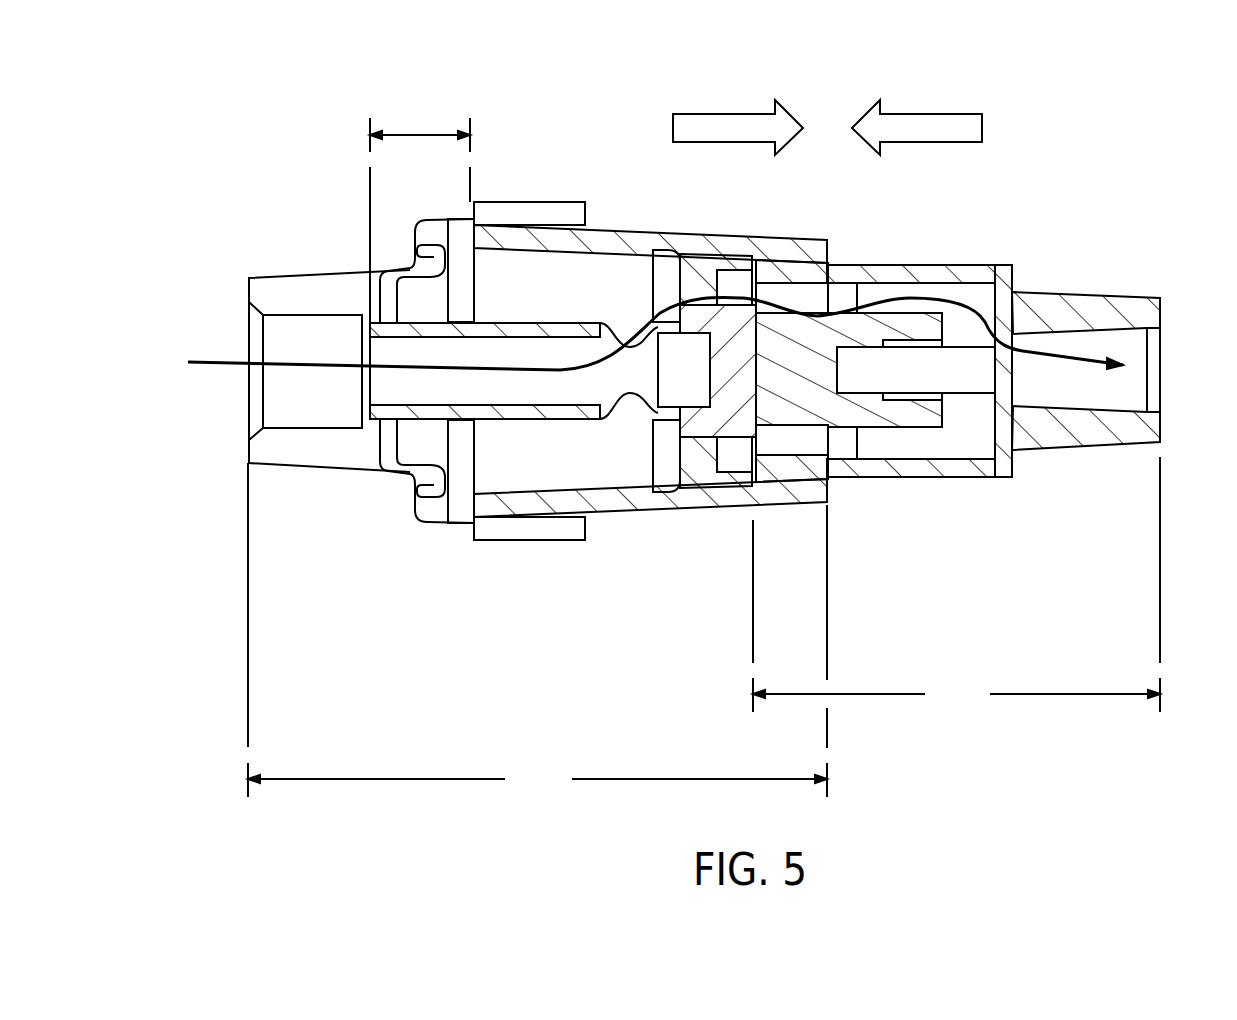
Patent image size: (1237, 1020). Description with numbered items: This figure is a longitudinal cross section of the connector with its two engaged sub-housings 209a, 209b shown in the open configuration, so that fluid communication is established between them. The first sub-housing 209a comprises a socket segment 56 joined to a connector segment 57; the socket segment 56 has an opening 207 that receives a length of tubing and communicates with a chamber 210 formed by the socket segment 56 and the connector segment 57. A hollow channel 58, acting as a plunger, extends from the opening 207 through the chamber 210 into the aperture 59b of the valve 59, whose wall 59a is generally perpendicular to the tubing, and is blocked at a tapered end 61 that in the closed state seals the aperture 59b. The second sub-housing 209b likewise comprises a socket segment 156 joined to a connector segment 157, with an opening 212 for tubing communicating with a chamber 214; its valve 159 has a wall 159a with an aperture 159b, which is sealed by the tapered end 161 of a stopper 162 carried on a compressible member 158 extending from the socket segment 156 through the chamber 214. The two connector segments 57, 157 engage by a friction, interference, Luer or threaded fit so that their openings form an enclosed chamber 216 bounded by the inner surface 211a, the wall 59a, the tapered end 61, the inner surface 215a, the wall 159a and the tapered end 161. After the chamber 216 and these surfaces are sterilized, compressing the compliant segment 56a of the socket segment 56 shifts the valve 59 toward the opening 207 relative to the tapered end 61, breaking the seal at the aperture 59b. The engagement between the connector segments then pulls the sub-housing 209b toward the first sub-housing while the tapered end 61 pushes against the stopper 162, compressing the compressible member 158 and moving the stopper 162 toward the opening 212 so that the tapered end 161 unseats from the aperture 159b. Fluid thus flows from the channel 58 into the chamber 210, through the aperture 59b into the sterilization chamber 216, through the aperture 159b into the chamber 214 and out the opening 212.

The socket segment 56 is at (297, 258).
The compliant segment 56a is at (422, 133).
The connector segment 57 is at (640, 215).
The hollow channel 58 is at (505, 405).
The valve 59 is at (700, 287).
The wall 59a is at (700, 457).
The aperture 59b is at (700, 440).
The tapered end 61 is at (738, 380).
The socket segment 156 is at (1070, 280).
The connector segment 157 is at (905, 252).
The compressible member 158 is at (965, 375).
The valve 159 is at (843, 302).
The wall 159a is at (840, 440).
The aperture 159b is at (848, 433).
The tapered end 161 is at (773, 347).
The stopper 162 is at (905, 420).
The opening 207 is at (228, 333).
The sub-housing 209a is at (537, 630).
The sub-housing 209b is at (956, 584).
The chamber 210 is at (590, 283).
The inner surface 211a is at (727, 482).
The opening 212 is at (1180, 353).
The chamber 214 is at (958, 297).
The inner surface 215a is at (783, 477).
The enclosed chamber 216 is at (733, 290).